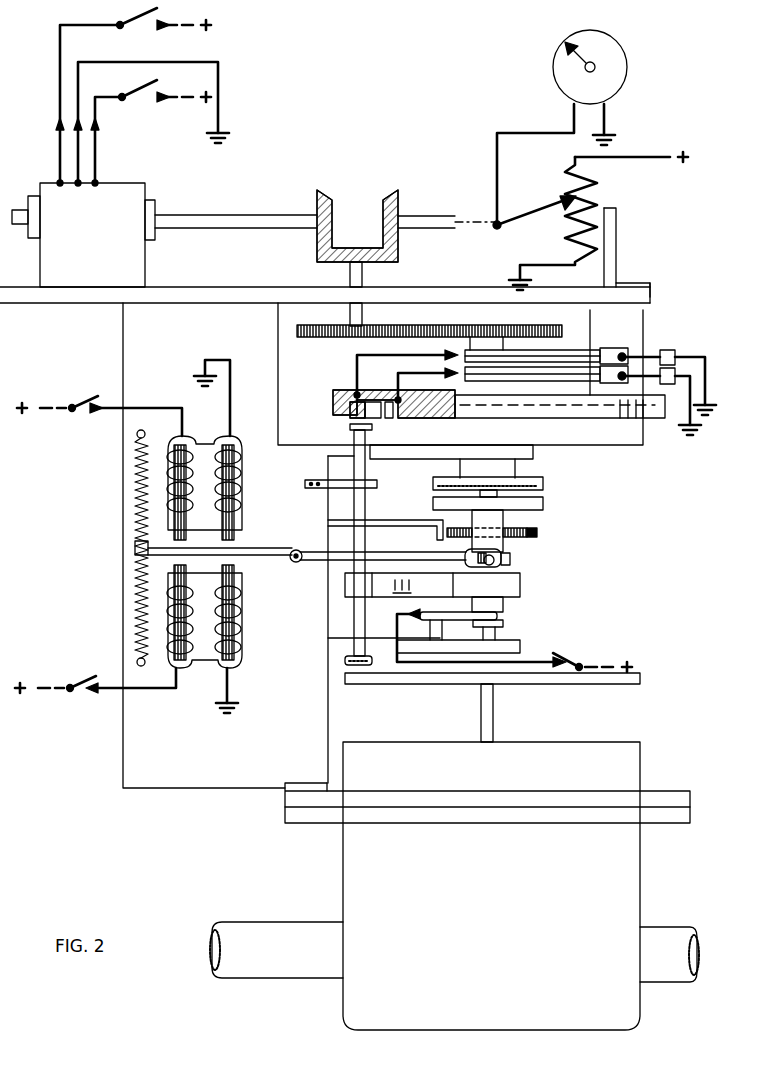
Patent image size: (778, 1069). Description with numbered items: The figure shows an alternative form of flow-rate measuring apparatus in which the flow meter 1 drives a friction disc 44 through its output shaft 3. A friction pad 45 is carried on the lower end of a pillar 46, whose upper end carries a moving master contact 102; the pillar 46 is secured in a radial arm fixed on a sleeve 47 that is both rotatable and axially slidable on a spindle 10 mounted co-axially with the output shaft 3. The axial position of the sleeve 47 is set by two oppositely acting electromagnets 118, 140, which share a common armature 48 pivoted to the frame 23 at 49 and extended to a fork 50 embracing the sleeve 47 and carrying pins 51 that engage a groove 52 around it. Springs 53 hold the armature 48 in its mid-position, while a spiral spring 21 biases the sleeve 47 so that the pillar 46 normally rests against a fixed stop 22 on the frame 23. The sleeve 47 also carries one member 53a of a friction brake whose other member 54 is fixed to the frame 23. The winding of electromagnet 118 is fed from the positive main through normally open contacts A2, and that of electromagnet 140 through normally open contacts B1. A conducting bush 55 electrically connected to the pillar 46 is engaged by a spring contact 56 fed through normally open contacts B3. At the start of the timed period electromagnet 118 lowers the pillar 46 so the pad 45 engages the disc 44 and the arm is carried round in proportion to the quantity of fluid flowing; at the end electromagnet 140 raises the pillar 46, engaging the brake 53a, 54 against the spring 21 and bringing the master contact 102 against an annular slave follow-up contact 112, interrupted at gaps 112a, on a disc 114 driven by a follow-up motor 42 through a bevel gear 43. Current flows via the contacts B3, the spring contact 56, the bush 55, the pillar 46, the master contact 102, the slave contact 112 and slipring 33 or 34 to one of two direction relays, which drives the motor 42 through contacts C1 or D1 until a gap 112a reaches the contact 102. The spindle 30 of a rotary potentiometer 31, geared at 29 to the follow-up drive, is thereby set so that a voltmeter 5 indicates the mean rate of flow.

The flow meter 1 is at (492, 886).
The output shaft 3 is at (495, 716).
The voltmeter 5 is at (560, 45).
The spindle 10 is at (510, 640).
The spiral spring 21 is at (540, 534).
The fixed stop 22 is at (330, 480).
The frame 23 is at (178, 361).
The gearing 29 is at (374, 244).
The spindle 30 is at (434, 216).
The rotary potentiometer 31 is at (588, 190).
The slipring 33 is at (448, 354).
The slipring 34 is at (445, 368).
The follow-up motor 42 is at (94, 246).
The bevel gear 43 is at (330, 195).
The friction disc 44 is at (603, 684).
The friction pad 45 is at (345, 660).
The pillar 46 is at (353, 608).
The sleeve 47 is at (503, 548).
The armature 48 is at (252, 548).
The pivot 49 is at (293, 562).
The fork 50 is at (462, 552).
The pins 51 is at (505, 565).
The groove 52 is at (500, 565).
The springs 53 is at (130, 575).
The friction brake member 53a is at (545, 505).
The friction brake member 54 is at (545, 485).
The conducting sleeve or bush 55 is at (497, 616).
The spring contact 56 is at (503, 623).
The moving master contact 102 is at (350, 427).
The annular follow-up slave contact 112 is at (336, 410).
The gaps 112a is at (378, 418).
The disc 114 is at (338, 388).
The electromagnet 118 is at (212, 458).
The electromagnet 140 is at (246, 605).
The contacts A2 is at (94, 396).
The contacts B1 is at (85, 678).
The contacts B3 is at (575, 655).
The contacts C1 is at (128, 18).
The contacts D1 is at (148, 92).